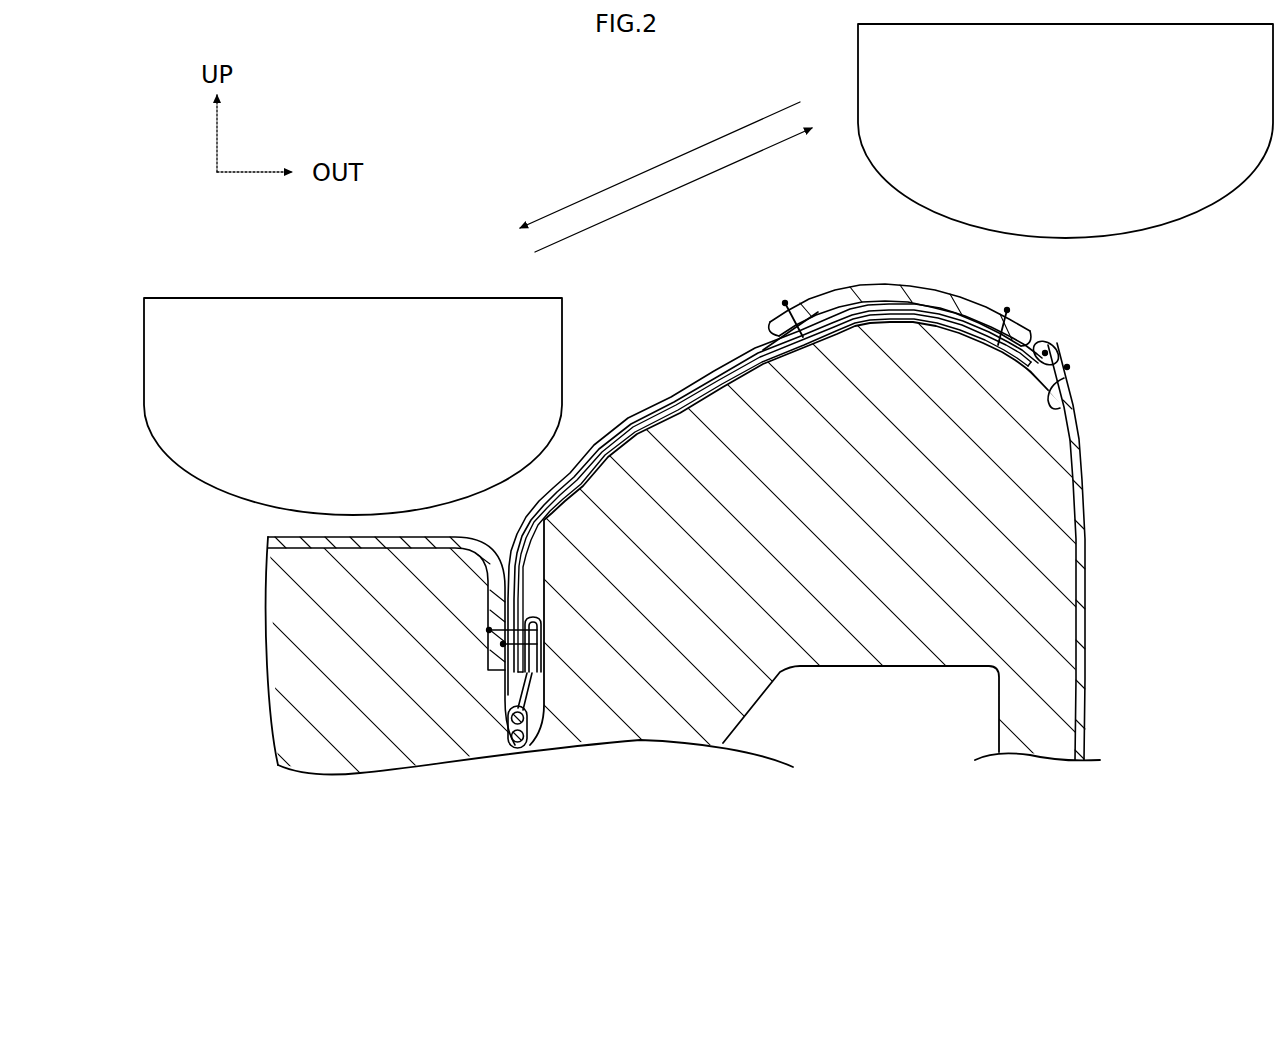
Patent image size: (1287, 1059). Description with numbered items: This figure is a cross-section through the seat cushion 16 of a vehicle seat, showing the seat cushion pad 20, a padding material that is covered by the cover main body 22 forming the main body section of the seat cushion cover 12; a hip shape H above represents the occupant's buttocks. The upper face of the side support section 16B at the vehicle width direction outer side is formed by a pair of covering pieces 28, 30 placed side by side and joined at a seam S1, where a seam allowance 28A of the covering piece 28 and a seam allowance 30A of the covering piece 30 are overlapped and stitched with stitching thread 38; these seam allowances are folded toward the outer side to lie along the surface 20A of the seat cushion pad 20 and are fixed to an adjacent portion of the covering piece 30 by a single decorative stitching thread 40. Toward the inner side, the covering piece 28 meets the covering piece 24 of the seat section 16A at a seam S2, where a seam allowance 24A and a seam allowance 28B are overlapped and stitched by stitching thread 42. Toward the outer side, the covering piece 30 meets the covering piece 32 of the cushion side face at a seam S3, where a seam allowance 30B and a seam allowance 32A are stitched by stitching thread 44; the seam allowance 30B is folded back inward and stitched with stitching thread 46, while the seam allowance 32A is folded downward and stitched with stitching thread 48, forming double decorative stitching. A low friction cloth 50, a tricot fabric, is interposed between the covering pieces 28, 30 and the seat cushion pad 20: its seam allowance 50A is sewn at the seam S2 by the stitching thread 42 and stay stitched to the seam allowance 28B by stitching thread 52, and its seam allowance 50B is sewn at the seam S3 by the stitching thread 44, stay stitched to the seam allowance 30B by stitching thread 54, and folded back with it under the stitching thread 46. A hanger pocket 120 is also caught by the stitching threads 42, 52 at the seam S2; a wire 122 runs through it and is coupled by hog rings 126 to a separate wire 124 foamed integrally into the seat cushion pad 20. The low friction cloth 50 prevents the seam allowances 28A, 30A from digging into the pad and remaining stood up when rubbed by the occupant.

The hip shape H is at (345, 298).
The seat cushion cover 12 is at (391, 625).
The seat cushion 16 is at (656, 290).
The seat section 16A is at (310, 526).
The side support section 16B is at (840, 273).
The seat cushion pad 20 is at (643, 529).
The surface of the seat cushion pad 20A is at (648, 428).
The cover main body 22 is at (391, 625).
The covering piece 24 is at (375, 537).
The seam allowance 24A is at (488, 702).
The covering piece 28 is at (607, 440).
The seam allowance 28A is at (825, 340).
The seam allowance 28B is at (502, 688).
The covering piece 30 is at (870, 282).
The seam allowance 30A is at (845, 312).
The seam allowance 30B is at (960, 318).
The covering piece 32 is at (1115, 551).
The seam allowance 32A is at (1052, 402).
The stitching thread 38 is at (763, 352).
The stitching thread 40 is at (785, 300).
The stitching thread 42 is at (489, 630).
The stitching thread 44 is at (1060, 352).
The stitching thread 46 is at (1008, 307).
The stitching thread 48 is at (1067, 367).
The low friction cloth 50 is at (697, 398).
The seam allowance 50A is at (518, 710).
The seam allowance 50B is at (980, 305).
The stitching thread 52 is at (503, 644).
The stitching thread 54 is at (1003, 340).
The hanger pocket 120 is at (545, 690).
The wire 122 is at (532, 700).
The wire 124 is at (530, 740).
The hog ring 126 is at (520, 750).
The seam S1 is at (752, 323).
The seam S2 is at (508, 543).
The seam S3 is at (1051, 331).